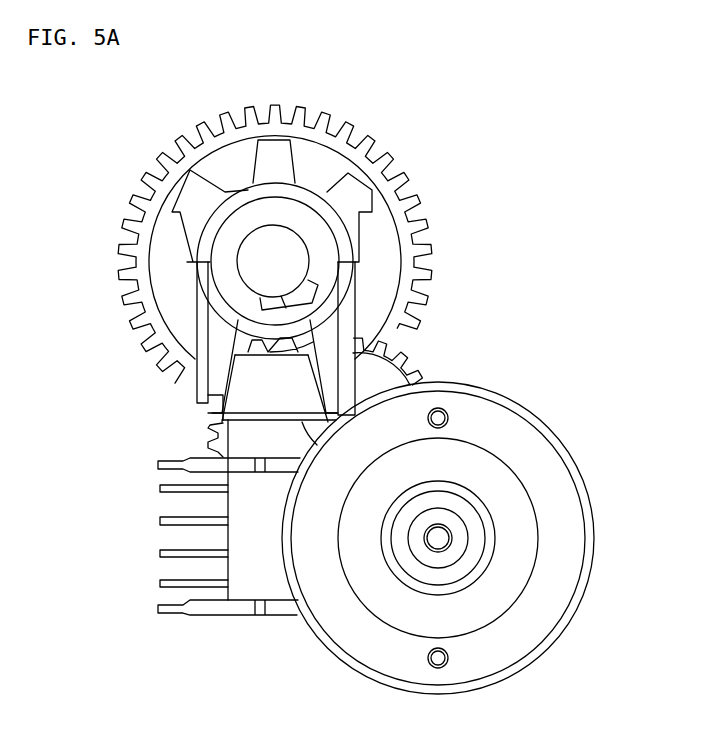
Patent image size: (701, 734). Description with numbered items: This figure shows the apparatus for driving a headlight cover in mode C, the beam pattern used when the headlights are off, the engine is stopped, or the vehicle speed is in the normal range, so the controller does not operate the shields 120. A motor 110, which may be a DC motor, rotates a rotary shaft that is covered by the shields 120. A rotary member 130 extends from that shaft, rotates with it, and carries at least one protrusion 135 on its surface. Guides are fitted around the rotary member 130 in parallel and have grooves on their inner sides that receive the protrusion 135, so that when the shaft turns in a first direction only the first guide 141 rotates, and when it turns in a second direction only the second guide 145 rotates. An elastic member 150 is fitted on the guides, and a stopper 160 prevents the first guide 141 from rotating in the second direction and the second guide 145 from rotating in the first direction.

The motor 110 is at (522, 617).
The shields 120 is at (187, 203).
The rotary member 130 is at (278, 242).
The protrusion 135 is at (277, 305).
The first guide 141 is at (224, 358).
The second guide 145 is at (327, 358).
The elastic member 150 is at (203, 322).
The stopper 160 is at (247, 408).